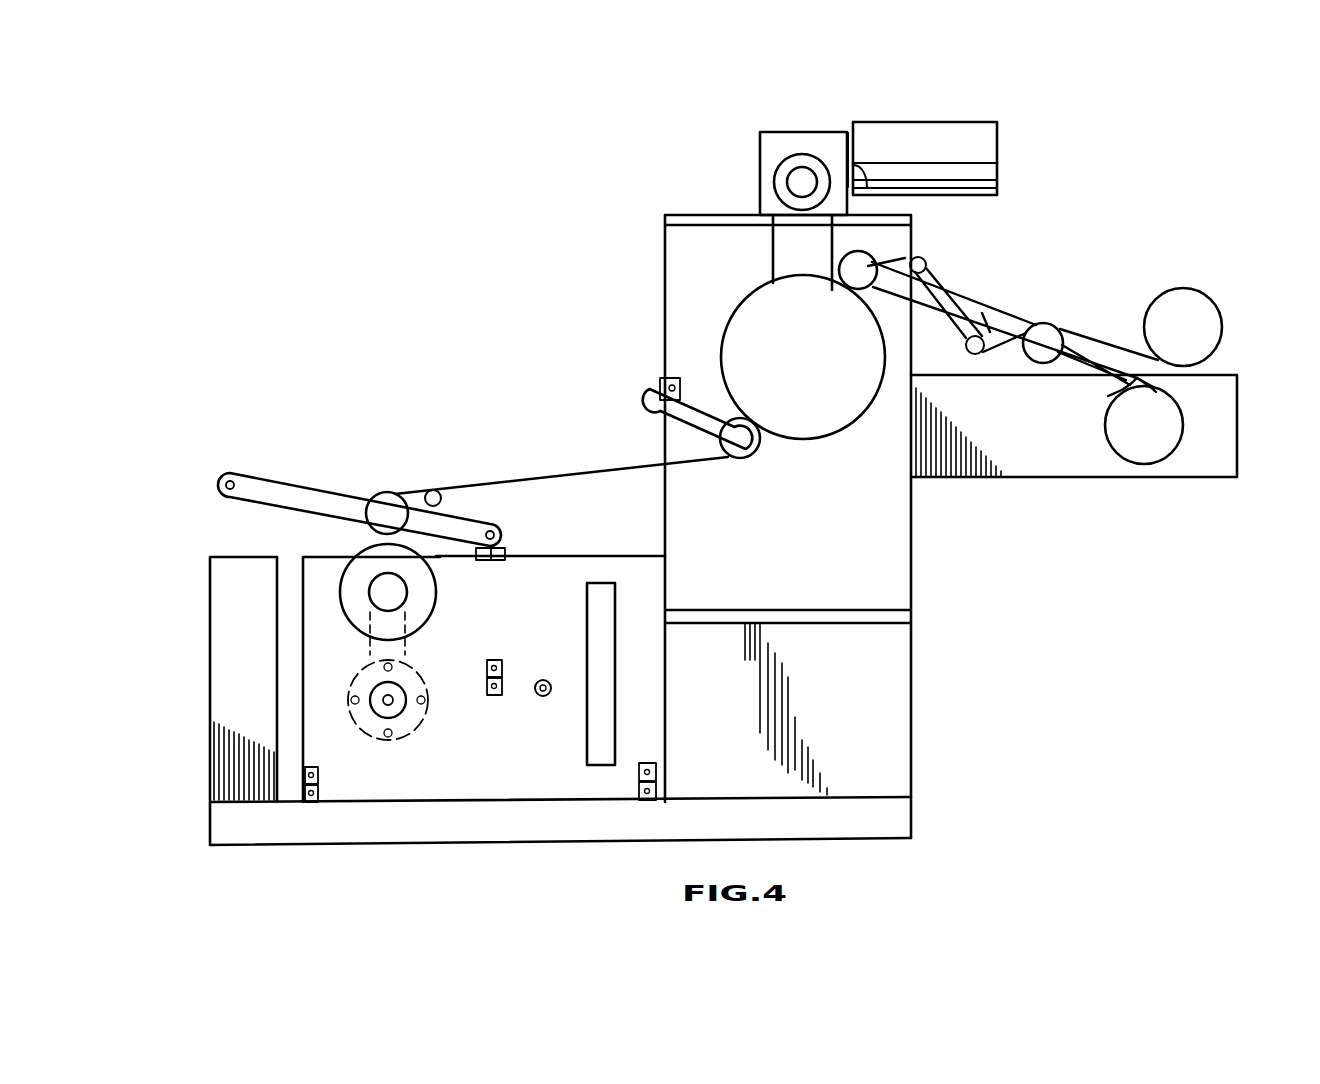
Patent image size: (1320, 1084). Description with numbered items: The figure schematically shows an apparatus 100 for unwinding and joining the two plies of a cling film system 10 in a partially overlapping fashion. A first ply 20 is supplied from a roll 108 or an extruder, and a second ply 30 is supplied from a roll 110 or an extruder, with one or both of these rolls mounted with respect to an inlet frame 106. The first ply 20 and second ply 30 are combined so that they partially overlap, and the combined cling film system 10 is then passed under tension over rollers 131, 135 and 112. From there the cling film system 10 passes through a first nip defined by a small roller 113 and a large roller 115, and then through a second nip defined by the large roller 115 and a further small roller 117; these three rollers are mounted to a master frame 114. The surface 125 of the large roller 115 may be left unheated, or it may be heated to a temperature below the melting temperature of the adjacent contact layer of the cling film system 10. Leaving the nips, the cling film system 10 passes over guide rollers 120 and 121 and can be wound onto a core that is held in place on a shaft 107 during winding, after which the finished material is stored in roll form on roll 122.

The web treatment apparatus 100 is at (702, 212).
The master frame 114 is at (697, 303).
The surface of roller 125 is at (745, 298).
The large roller 115 is at (721, 358).
The small roller 117 is at (665, 440).
The small roller 113 is at (876, 250).
The roller 112 is at (926, 262).
The cling film system 10 is at (517, 480).
The roller 131 is at (1048, 323).
The first ply 20 is at (1115, 343).
The roll 108 is at (1205, 292).
The second ply 30 is at (1125, 380).
The roller 135 is at (960, 356).
The roll 110 is at (1105, 428).
The inlet frame 106 is at (1195, 462).
The guide roller 121 is at (378, 494).
The guide roller 120 is at (433, 490).
The roll 122 is at (355, 552).
The shaft 107 is at (323, 637).